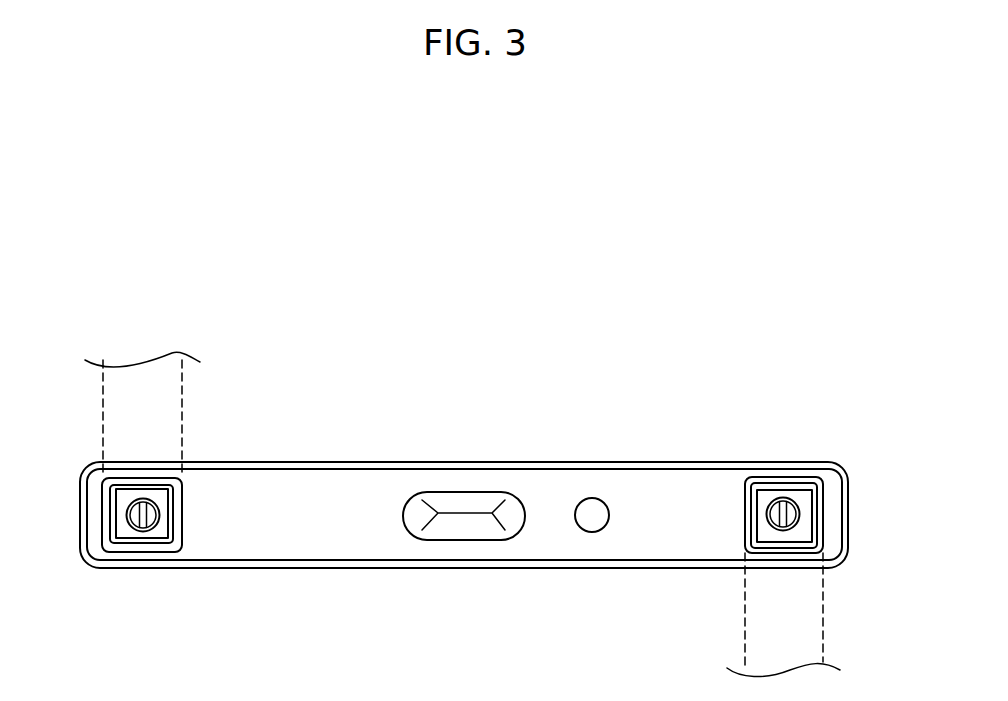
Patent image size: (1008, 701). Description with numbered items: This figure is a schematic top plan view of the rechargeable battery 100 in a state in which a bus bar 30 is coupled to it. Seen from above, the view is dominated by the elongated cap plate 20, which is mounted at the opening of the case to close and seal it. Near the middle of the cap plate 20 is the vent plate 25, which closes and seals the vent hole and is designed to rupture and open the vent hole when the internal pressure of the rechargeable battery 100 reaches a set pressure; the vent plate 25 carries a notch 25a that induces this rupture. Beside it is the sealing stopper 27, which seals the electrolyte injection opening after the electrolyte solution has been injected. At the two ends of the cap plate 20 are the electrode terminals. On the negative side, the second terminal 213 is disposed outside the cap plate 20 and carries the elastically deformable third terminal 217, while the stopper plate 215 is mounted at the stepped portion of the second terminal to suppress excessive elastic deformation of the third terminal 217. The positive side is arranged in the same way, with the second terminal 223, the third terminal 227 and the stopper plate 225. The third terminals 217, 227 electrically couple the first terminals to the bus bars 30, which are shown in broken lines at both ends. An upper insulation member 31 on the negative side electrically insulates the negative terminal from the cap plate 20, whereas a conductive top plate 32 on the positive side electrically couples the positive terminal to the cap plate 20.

The rechargeable battery 100 is at (537, 352).
The cap plate 20 is at (302, 537).
The vent plate 25 is at (442, 530).
The notch 25a is at (472, 517).
The sealing stopper 27 is at (592, 522).
The bus bar 30 is at (183, 372).
The upper insulation member 31 is at (181, 498).
The top plate 32 is at (747, 533).
The second terminal 213 is at (176, 544).
The stopper plate 215 is at (155, 533).
The third terminal 217 is at (136, 525).
The second terminal 223 is at (755, 488).
The stopper plate 225 is at (773, 495).
The third terminal 227 is at (792, 498).